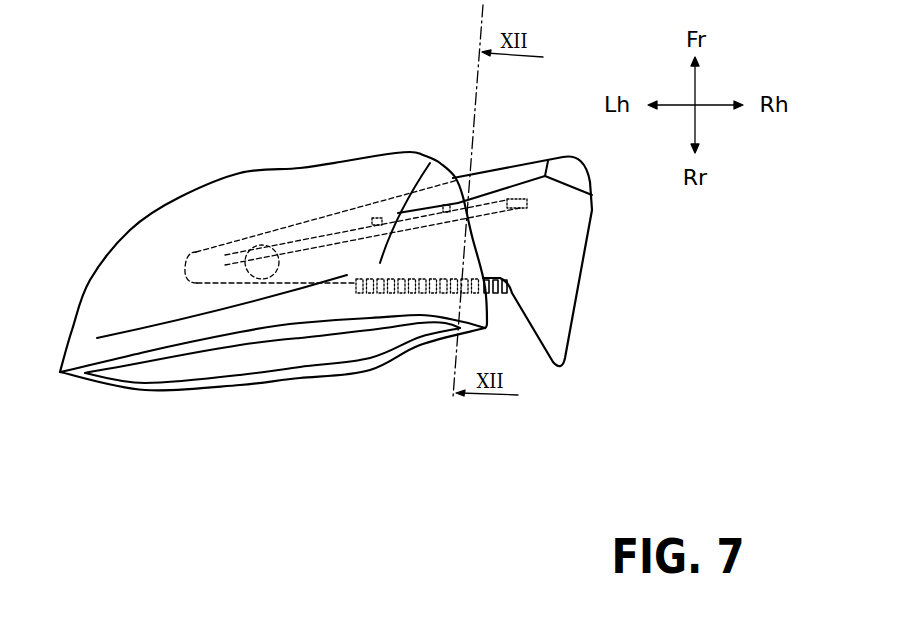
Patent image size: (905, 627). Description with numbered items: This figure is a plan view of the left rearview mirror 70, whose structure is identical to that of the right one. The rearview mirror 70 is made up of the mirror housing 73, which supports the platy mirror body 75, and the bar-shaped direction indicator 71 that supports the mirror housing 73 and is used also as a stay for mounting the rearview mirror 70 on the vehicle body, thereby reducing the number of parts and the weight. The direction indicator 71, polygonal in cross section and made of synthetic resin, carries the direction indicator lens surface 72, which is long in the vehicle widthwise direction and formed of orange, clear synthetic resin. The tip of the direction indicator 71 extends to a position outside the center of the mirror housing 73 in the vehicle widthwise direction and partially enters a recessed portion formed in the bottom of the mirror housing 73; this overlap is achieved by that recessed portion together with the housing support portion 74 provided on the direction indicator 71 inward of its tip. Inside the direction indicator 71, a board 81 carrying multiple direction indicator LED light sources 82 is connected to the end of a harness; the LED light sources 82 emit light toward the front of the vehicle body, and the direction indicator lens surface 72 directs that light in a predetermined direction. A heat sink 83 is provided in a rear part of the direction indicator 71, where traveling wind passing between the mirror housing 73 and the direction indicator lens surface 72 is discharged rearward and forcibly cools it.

The rearview mirror 70 is at (129, 198).
The direction indicator 71 is at (307, 220).
The direction indicator lens surface 72 is at (456, 177).
The mirror housing 73 is at (183, 232).
The housing support portion 74 is at (270, 245).
The mirror body 75 is at (292, 360).
The board 81 is at (520, 197).
The direction indicator LED light sources 82 is at (508, 199).
The heat sink 83 is at (390, 294).